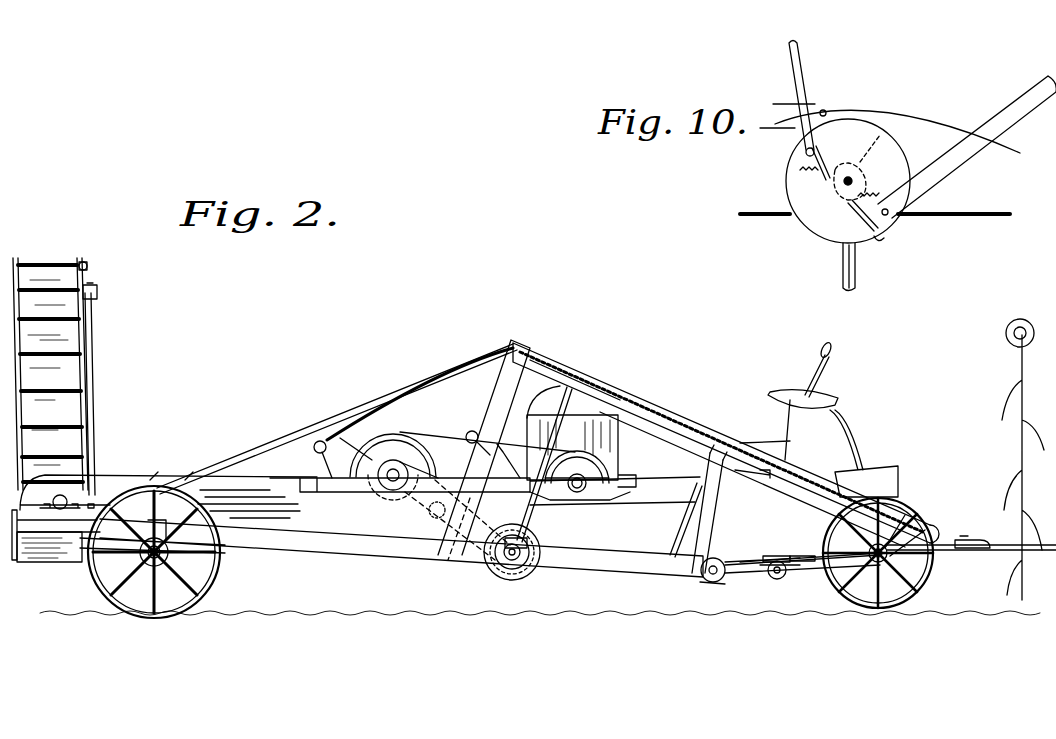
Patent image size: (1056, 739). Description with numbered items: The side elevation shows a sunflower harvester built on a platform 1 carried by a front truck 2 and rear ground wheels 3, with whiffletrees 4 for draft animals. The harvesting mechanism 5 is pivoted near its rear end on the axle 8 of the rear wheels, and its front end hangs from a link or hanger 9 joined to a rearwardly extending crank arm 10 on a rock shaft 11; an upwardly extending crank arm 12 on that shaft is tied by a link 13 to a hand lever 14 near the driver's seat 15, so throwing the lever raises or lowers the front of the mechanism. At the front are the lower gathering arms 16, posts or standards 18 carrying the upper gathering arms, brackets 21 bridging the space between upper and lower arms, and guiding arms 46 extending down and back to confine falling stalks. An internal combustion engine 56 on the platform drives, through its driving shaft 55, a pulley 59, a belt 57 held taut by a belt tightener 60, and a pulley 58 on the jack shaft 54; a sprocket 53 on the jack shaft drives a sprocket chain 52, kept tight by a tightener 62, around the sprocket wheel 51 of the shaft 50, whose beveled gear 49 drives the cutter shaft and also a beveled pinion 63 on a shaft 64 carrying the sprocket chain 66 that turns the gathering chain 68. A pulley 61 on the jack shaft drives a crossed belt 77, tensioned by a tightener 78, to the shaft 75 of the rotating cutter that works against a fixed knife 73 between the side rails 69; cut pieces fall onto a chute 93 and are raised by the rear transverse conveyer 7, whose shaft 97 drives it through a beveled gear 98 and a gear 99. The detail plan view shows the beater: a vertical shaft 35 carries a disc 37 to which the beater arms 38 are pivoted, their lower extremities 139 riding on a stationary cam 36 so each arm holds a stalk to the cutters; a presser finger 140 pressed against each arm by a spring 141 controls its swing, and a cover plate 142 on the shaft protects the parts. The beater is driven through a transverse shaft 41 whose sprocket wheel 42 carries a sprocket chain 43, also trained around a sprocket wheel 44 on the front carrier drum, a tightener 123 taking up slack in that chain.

In FIG. 2, the platform 1 is at (862, 480).
In FIG. 2, the front truck 2 is at (933, 575).
In FIG. 2, the rear ground wheels 3 is at (220, 578).
In FIG. 2, the whiffletrees 4 is at (980, 540).
In FIG. 2, the harvesting mechanism 5 is at (391, 553).
In FIG. 2, the rear transverse conveyer 7 is at (44, 374).
In FIG. 2, the axle 8 is at (154, 556).
In FIG. 2, the link or hanger 9 is at (680, 527).
In FIG. 2, the crank arm 10 is at (650, 400).
In FIG. 2, the rock shaft 11 is at (745, 475).
In FIG. 2, the crank arm 12 is at (715, 445).
In FIG. 2, the link 13 is at (762, 443).
In FIG. 2, the hand lever 14 is at (818, 375).
In FIG. 2, the driver's seat 15 is at (835, 400).
In FIG. 2, the lower gathering arms 16 is at (845, 580).
In FIG. 2, the posts or standards 18 is at (497, 403).
In FIG. 2, the brackets 21 is at (920, 528).
In FIG. 10, the vertical shaft 35 is at (845, 185).
In FIG. 10, the stationary cam 36 is at (880, 140).
In FIG. 10, the disc 37 is at (822, 232).
In FIG. 2, the beater arms 38 is at (797, 563).
In FIG. 10, the beater arms 38 is at (800, 80).
In FIG. 2, the transverse shaft 41 is at (783, 573).
In FIG. 10, the transverse shaft 41 is at (856, 278).
In FIG. 2, the sprocket wheel 42 is at (772, 578).
In FIG. 2, the sprocket chain 43 is at (757, 582).
In FIG. 2, the sprocket wheel 44 is at (712, 594).
In FIG. 2, the guiding arms 46 is at (428, 383).
In FIG. 2, the beveled gear 49 is at (495, 563).
In FIG. 2, the shaft 50 is at (520, 552).
In FIG. 2, the sprocket wheel 51 is at (512, 580).
In FIG. 2, the sprocket chain 52 is at (430, 475).
In FIG. 2, the sprocket 53 is at (383, 478).
In FIG. 2, the jack shaft 54 is at (393, 478).
In FIG. 2, the driving shaft 55 is at (577, 488).
In FIG. 2, the internal combustion engine 56 is at (607, 435).
In FIG. 2, the belt 57 is at (420, 437).
In FIG. 2, the pulley 58 is at (390, 440).
In FIG. 2, the pulley 59 is at (595, 478).
In FIG. 2, the belt tightener 60 is at (472, 431).
In FIG. 2, the pulley 61 is at (375, 455).
In FIG. 2, the tightener 62 is at (445, 533).
In FIG. 2, the beveled pinion 63 is at (527, 543).
In FIG. 2, the shaft 64 is at (527, 443).
In FIG. 2, the sprocket chain 66 is at (553, 378).
In FIG. 2, the gathering chain 68 is at (605, 381).
In FIG. 2, the side rails 69 is at (198, 490).
In FIG. 2, the fixed knife 73 is at (92, 508).
In FIG. 2, the shaft 75 is at (68, 500).
In FIG. 2, the crossed belt 77 is at (252, 470).
In FIG. 2, the tightener 78 is at (318, 442).
In FIG. 2, the chute 93 is at (60, 555).
In FIG. 2, the shaft 97 is at (95, 372).
In FIG. 2, the beveled gear 98 is at (97, 292).
In FIG. 2, the gear 99 is at (86, 268).
In FIG. 2, the tightener 123 is at (738, 587).
In FIG. 10, the lower extremity 139 is at (885, 242).
In FIG. 10, the presser finger 140 is at (820, 160).
In FIG. 10, the spring 141 is at (805, 178).
In FIG. 2, the cover plate 142 is at (770, 562).